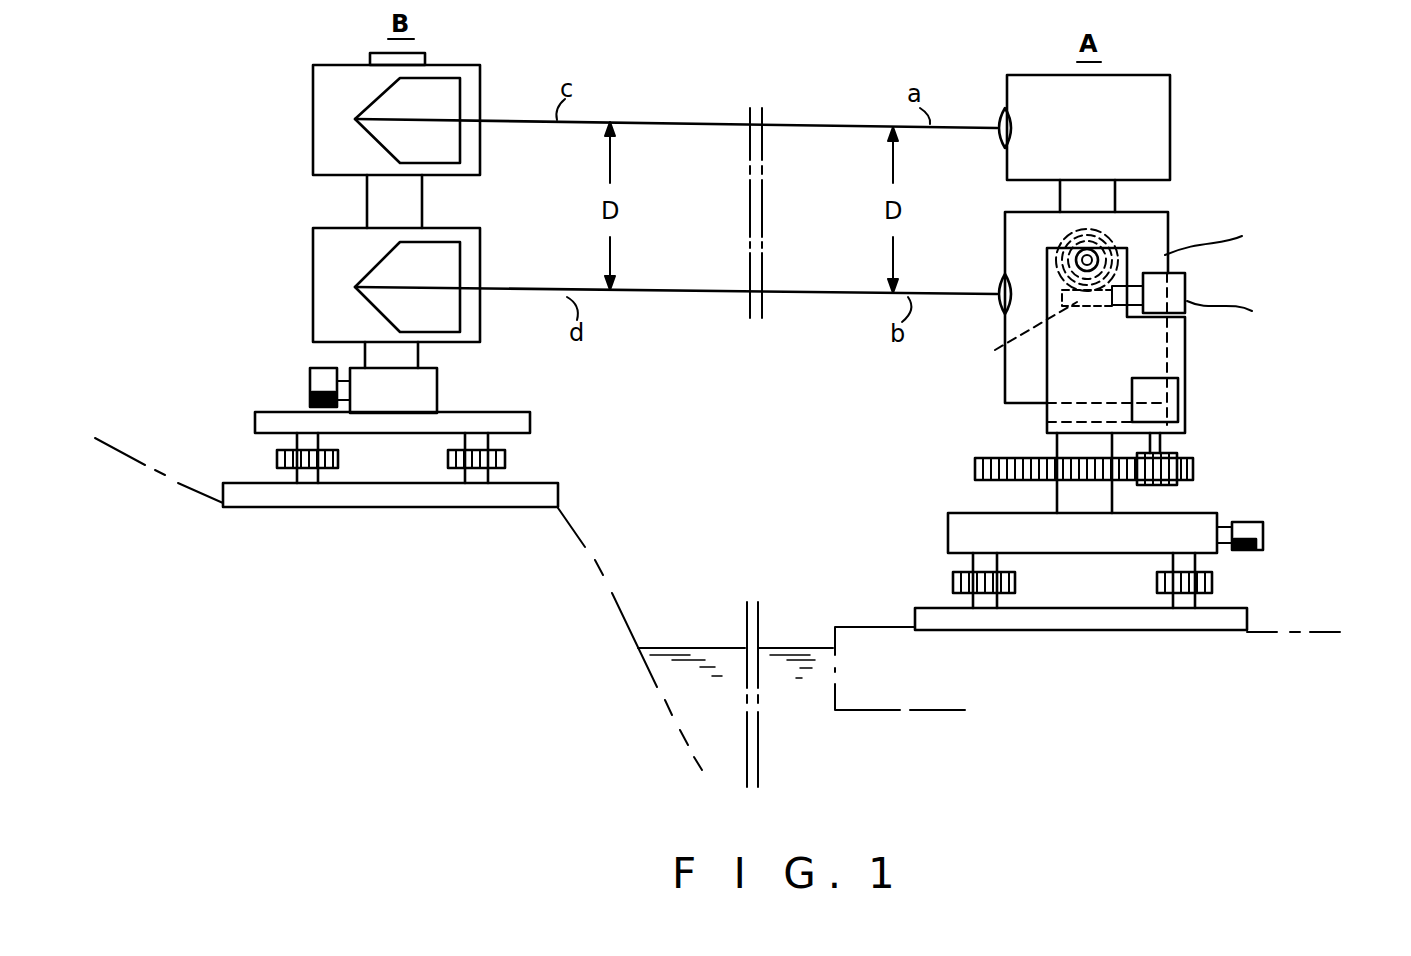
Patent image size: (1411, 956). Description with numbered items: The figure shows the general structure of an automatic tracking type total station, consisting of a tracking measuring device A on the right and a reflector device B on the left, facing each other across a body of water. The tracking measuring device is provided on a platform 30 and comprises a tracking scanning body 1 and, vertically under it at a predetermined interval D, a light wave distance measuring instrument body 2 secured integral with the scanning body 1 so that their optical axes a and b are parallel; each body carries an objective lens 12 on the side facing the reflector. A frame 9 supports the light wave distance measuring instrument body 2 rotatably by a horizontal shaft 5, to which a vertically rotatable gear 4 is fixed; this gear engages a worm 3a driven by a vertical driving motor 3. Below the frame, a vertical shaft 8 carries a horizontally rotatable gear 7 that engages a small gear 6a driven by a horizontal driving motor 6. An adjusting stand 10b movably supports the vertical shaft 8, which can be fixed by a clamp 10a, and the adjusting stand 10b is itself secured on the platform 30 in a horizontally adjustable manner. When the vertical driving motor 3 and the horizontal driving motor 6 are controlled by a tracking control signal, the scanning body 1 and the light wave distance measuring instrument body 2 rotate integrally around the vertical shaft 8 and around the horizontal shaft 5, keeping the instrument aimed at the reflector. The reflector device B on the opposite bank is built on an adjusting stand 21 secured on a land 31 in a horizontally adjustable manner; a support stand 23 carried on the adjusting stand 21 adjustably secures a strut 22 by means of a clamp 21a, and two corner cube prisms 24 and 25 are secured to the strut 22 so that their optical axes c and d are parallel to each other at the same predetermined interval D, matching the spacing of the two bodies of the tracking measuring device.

The tracking scanning body 1 is at (1173, 128).
The light wave distance measuring instrument body 2 is at (1172, 244).
The vertical driving motor 3 is at (1182, 288).
The worm 3a is at (1013, 338).
The vertically rotatable gear 4 is at (1102, 233).
The horizontal shaft 5 is at (1083, 258).
The horizontal driving motor 6 is at (1172, 392).
The small gear 6a is at (1172, 452).
The horizontally rotatable gear 7 is at (980, 457).
The vertical shaft 8 is at (1065, 498).
The frame 9 is at (1152, 348).
The clamp 10a is at (1262, 527).
The adjusting stand 10b is at (1193, 523).
The objective lens 12 is at (998, 120).
The adjusting stand 21 is at (515, 423).
The clamp 21a is at (310, 381).
The strut 22 is at (367, 210).
The support stand 23 is at (413, 392).
The corner cube prism 24 is at (440, 267).
The corner cube prism 25 is at (443, 90).
The platform 30 is at (976, 687).
The land 31 is at (463, 563).